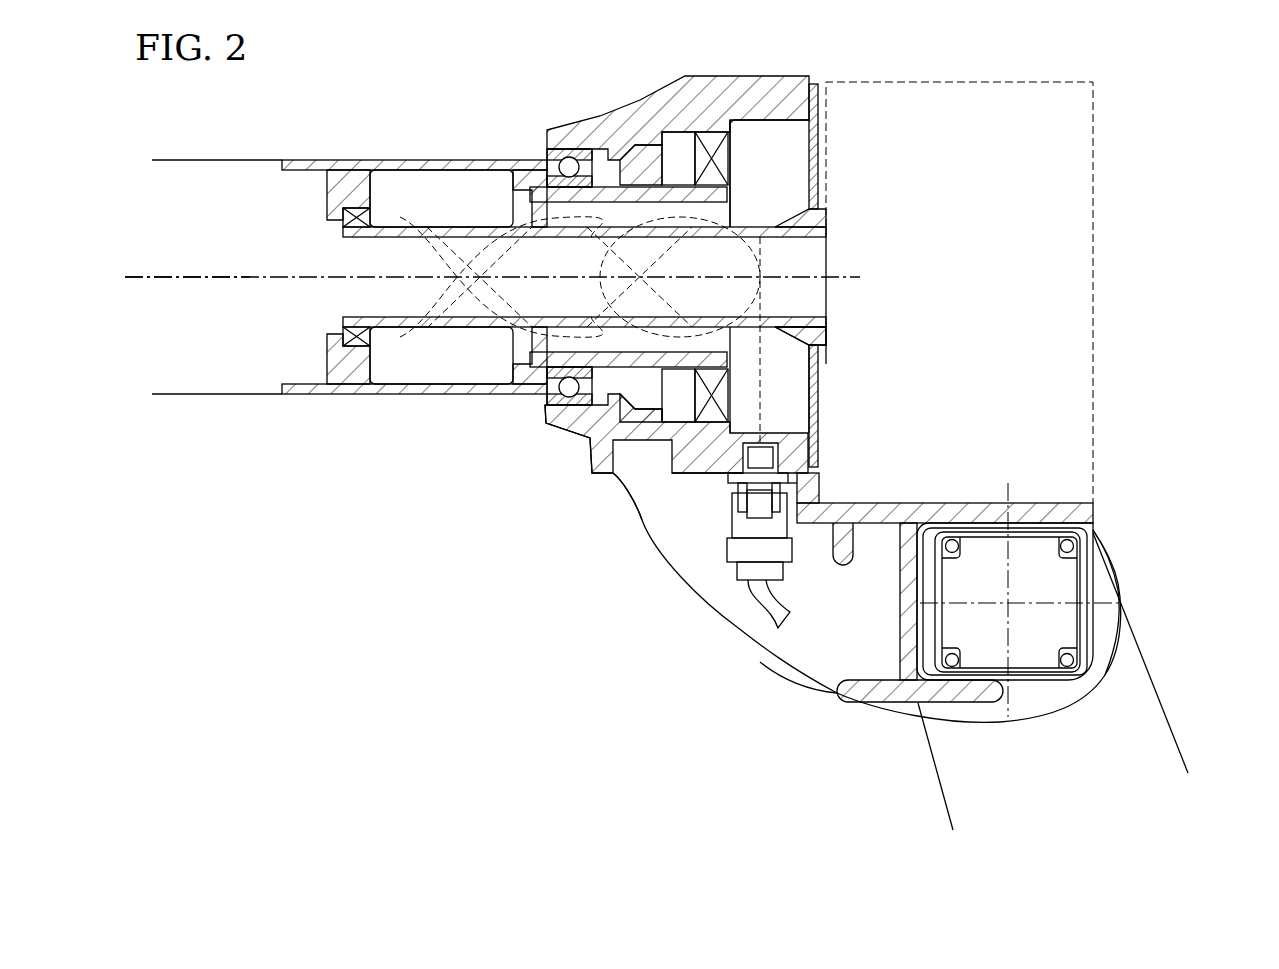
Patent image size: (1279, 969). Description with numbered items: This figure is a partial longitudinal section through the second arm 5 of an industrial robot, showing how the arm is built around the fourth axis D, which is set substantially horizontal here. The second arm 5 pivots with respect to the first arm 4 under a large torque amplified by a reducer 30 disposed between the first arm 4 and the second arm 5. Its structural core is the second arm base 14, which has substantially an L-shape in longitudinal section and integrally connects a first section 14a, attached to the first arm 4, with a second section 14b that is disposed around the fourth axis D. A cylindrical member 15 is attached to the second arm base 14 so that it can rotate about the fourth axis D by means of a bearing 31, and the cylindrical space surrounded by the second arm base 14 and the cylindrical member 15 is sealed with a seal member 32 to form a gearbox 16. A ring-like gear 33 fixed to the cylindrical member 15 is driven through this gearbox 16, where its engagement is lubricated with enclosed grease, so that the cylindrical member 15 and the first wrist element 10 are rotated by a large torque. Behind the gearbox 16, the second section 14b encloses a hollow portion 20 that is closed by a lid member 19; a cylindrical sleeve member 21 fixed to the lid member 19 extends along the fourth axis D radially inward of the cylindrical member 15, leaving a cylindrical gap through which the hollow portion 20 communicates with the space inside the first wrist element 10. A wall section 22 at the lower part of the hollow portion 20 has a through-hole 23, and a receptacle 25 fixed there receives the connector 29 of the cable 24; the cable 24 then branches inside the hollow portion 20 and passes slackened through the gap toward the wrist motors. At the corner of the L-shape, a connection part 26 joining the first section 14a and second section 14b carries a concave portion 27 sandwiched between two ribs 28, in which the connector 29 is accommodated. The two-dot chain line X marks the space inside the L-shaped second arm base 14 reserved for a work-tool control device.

The first arm 4 is at (1180, 708).
The second arm 5 is at (1050, 496).
The first wrist element 10 is at (348, 160).
The second arm base 14 is at (966, 478).
The first section 14a is at (972, 703).
The second section 14b is at (683, 476).
The cylindrical member 15 is at (590, 437).
The gearbox 16 is at (680, 138).
The lid member 19 is at (820, 165).
The hollow portion 20 is at (797, 130).
The cylindrical sleeve member 21 is at (828, 336).
The wall section 22 is at (718, 478).
The through-hole 23 is at (800, 420).
The cable 24 is at (820, 392).
The receptacle 25 is at (792, 456).
The connection part 26 is at (727, 632).
The concave portion 27 is at (826, 528).
The ribs 28 is at (800, 680).
The connector 29 is at (722, 580).
The reducer 30 is at (1115, 648).
The bearing 31 is at (546, 421).
The seal member 32 is at (745, 185).
The ring-like gear 33 is at (633, 490).
The fourth axis D is at (185, 270).
The two-dot chain line X is at (1097, 235).